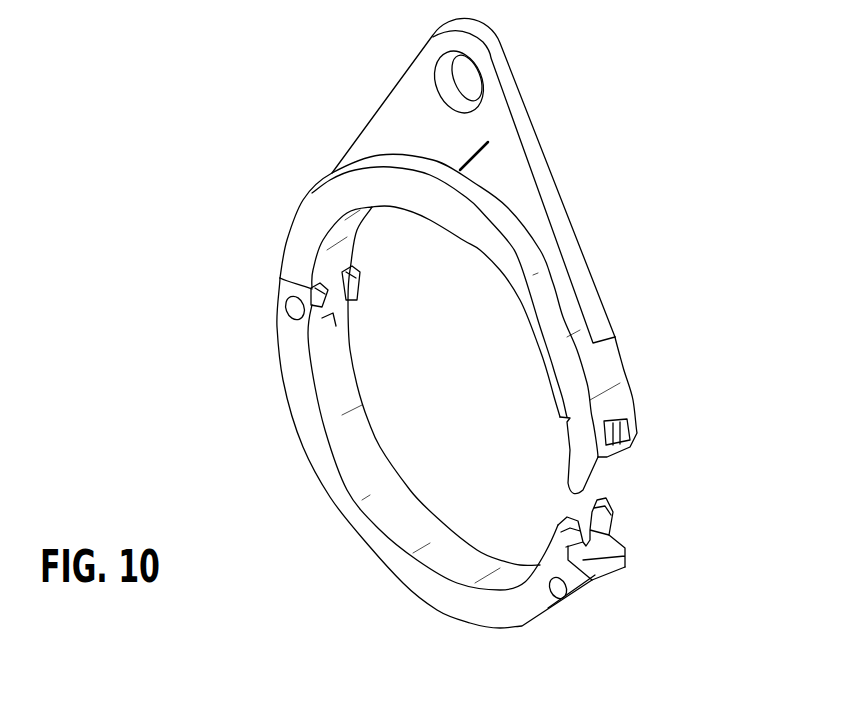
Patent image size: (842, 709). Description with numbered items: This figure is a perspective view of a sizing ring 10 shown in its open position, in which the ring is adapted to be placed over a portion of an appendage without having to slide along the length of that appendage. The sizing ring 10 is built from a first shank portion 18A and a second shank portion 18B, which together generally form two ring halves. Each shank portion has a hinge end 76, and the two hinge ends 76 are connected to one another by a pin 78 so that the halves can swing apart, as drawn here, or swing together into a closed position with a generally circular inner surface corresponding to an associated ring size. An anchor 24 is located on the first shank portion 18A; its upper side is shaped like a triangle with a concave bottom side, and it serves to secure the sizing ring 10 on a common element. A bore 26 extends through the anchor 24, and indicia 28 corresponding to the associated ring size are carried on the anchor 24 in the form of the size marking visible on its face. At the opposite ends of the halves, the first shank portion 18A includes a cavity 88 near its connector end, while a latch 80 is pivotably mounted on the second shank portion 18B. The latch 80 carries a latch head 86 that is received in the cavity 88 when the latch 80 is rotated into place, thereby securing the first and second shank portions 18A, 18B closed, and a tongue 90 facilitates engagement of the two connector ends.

The sizing ring 10 is at (494, 335).
The first shank portion 18A is at (608, 372).
The second shank portion 18B is at (440, 595).
The anchor 24 is at (509, 180).
The bore 26 is at (468, 68).
The size indicia 28 is at (497, 158).
The hinge end 76 is at (356, 288).
The pin 78 is at (292, 312).
The latch 80 is at (643, 575).
The latch head 86 is at (628, 557).
The cavity 88 is at (636, 440).
The tongue 90 is at (600, 482).